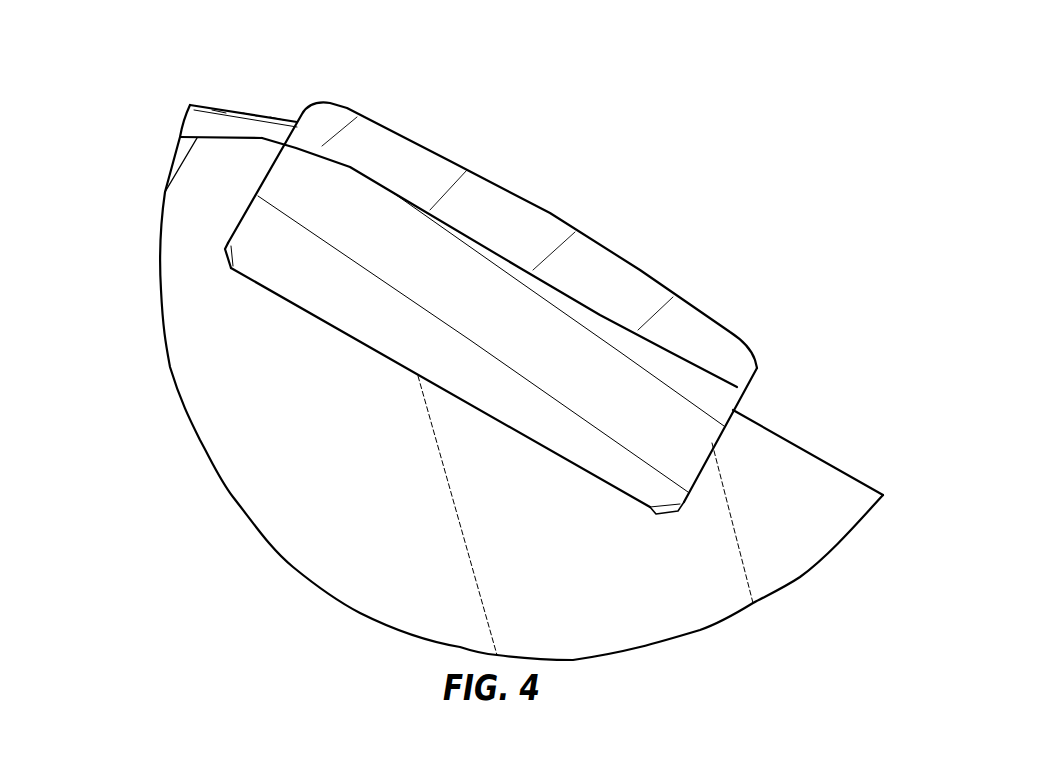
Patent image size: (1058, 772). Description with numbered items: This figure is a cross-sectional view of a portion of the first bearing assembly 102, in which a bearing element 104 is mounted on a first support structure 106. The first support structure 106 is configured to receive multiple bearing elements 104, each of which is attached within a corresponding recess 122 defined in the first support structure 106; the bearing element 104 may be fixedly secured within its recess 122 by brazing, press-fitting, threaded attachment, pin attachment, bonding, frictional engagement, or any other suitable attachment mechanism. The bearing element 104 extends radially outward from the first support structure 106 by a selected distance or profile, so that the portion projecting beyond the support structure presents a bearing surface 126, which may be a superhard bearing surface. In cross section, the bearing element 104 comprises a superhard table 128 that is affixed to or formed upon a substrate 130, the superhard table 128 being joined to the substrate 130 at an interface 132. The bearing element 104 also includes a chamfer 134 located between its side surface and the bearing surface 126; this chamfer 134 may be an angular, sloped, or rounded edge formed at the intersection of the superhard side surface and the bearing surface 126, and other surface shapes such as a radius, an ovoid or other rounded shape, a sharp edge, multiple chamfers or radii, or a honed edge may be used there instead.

The first bearing assembly 102 is at (200, 68).
The bearing element 104 is at (497, 393).
The first support structure 106 is at (838, 500).
The recess 122 is at (307, 313).
The bearing surface 126 is at (424, 146).
The superhard table 128 is at (585, 293).
The substrate 130 is at (280, 252).
The interface 132 is at (350, 167).
The chamfer 134 is at (755, 353).